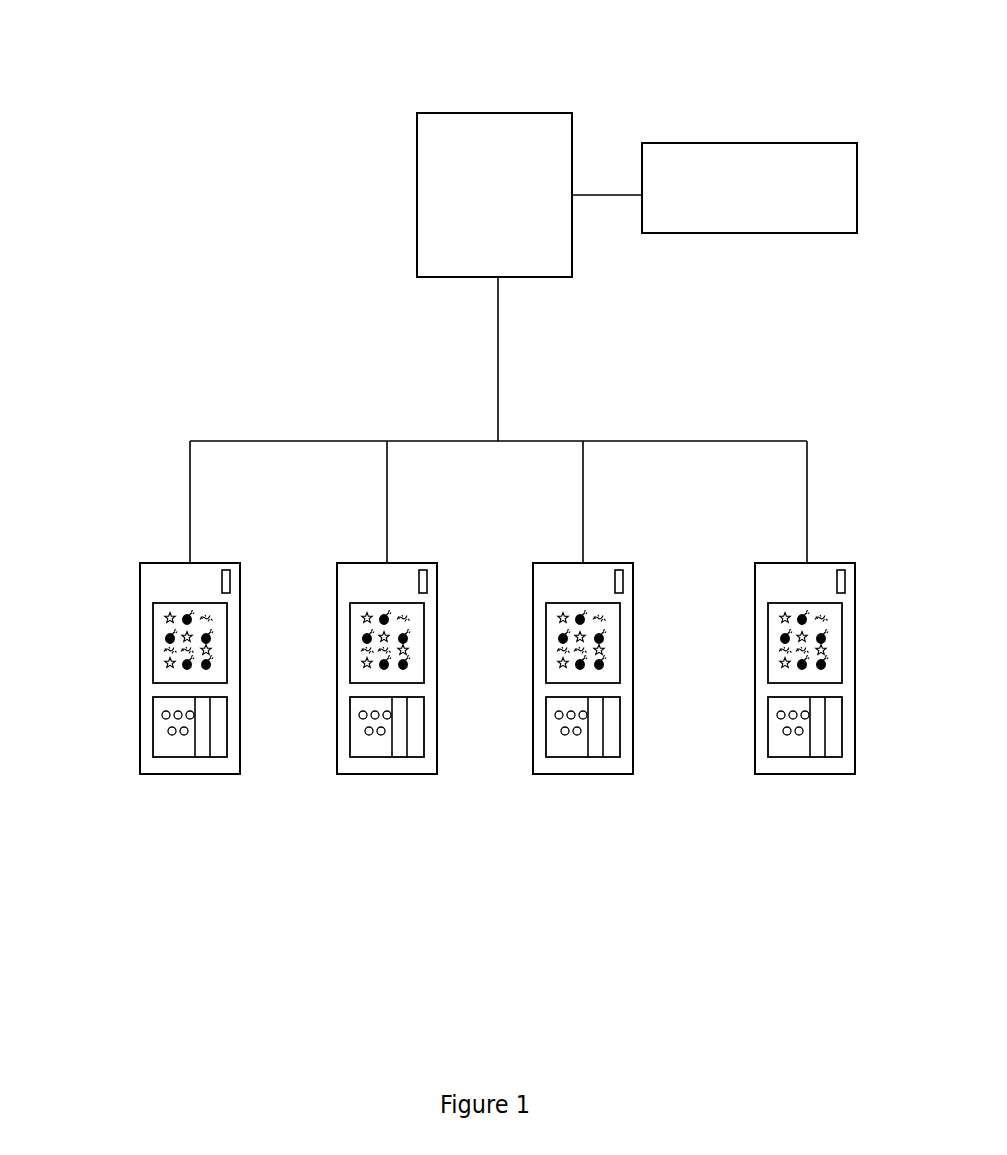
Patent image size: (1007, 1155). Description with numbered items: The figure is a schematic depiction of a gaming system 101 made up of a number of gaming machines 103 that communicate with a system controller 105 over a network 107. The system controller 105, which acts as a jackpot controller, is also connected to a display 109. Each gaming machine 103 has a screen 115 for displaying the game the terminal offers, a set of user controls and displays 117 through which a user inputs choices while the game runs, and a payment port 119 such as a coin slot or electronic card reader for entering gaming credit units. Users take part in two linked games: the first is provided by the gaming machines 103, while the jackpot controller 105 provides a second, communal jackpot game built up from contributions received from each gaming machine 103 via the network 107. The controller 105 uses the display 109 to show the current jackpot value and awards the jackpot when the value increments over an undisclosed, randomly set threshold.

The gaming system 101 is at (617, 923).
The gaming machine 103 is at (445, 679).
The system controller 105 is at (480, 113).
The network 107 is at (373, 441).
The display 109 is at (757, 143).
The screen 115 is at (153, 622).
The set of user controls and displays 117 is at (153, 710).
The payment port 119 is at (222, 573).